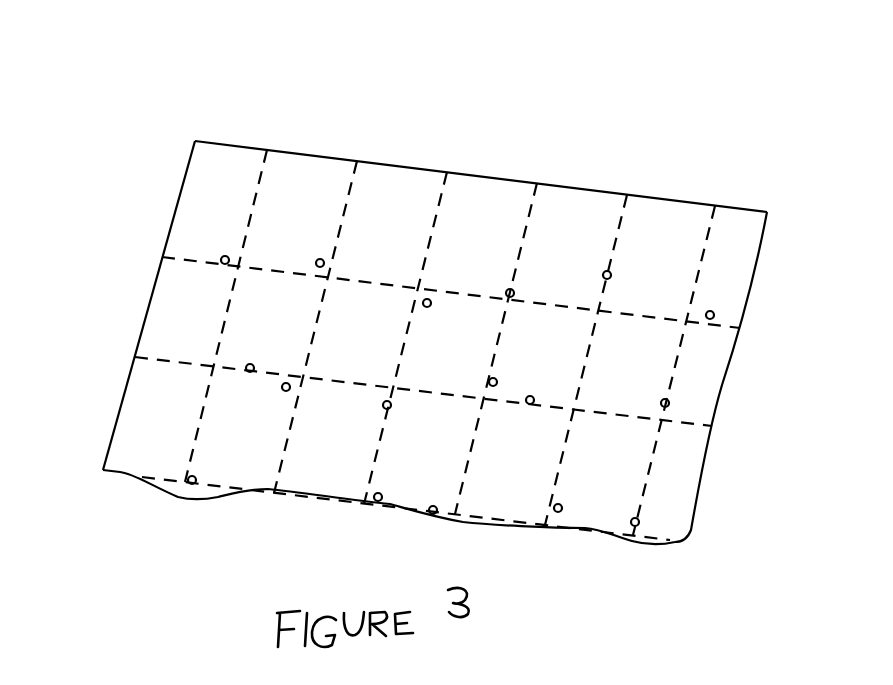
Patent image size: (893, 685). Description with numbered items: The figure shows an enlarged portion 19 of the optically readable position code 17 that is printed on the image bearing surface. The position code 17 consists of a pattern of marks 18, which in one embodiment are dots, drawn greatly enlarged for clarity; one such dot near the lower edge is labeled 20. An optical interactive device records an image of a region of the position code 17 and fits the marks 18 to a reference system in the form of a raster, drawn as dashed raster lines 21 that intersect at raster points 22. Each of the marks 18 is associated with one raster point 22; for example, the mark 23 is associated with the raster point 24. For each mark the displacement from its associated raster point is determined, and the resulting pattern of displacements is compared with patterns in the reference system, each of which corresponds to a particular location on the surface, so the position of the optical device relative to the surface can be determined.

The position code 17 is at (477, 235).
The marks 18 is at (196, 482).
The enlarged portion 19 is at (42, 50).
The hole 20 is at (290, 391).
The raster lines 21 is at (193, 257).
The raster points 22 is at (670, 403).
The mark 23 is at (318, 260).
The raster point 24 is at (338, 273).